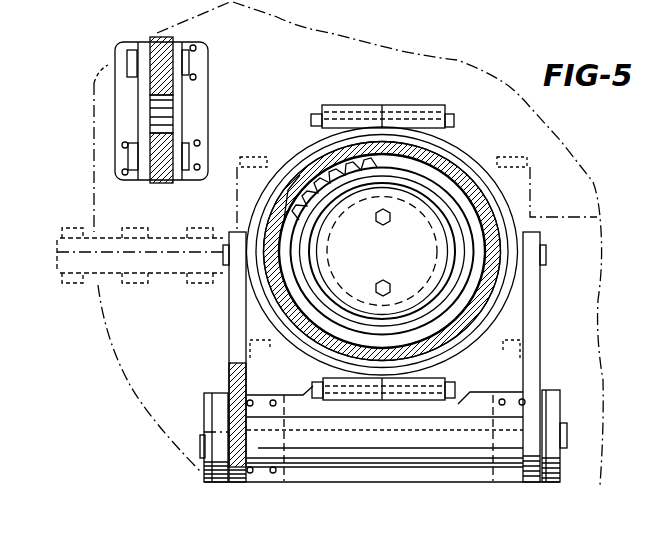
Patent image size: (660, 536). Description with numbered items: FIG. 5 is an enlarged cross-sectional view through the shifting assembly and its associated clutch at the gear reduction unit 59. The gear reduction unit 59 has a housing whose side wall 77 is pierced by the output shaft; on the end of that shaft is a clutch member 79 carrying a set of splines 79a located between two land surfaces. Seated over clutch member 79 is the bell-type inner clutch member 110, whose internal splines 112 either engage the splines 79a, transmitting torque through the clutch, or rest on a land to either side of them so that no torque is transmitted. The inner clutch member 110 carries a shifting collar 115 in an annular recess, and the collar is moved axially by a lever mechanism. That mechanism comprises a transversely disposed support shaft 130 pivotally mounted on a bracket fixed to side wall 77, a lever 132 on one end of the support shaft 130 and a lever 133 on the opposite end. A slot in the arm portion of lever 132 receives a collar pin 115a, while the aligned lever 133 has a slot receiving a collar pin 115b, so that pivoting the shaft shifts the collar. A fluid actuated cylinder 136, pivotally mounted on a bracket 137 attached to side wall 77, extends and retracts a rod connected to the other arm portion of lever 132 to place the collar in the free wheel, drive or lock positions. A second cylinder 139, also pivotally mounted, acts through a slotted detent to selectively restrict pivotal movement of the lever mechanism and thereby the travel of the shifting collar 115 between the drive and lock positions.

The gear reduction unit 59 is at (590, 200).
The side wall 77 is at (118, 328).
The clutch member 79 is at (303, 272).
The splines 79a is at (315, 193).
The inner clutch member 110 is at (497, 305).
The internal splines 112 is at (333, 168).
The shifting collar 115 is at (455, 142).
The collar pin 115a is at (230, 283).
The collar pin 115b is at (540, 253).
The support shaft 130 is at (270, 435).
The lever 132 is at (233, 360).
The lever 133 is at (532, 375).
The cylinder 136 is at (170, 137).
The bracket 137 is at (117, 105).
The cylinder 139 is at (172, 85).